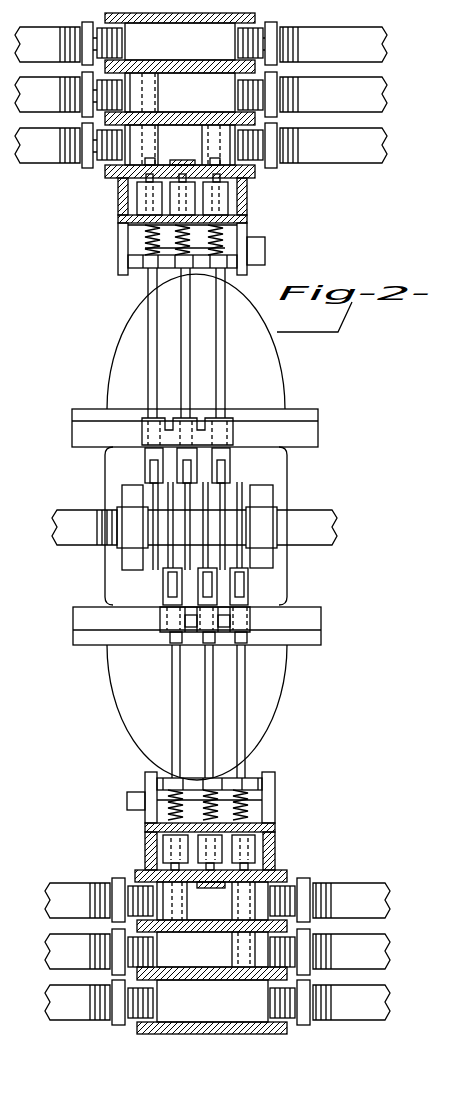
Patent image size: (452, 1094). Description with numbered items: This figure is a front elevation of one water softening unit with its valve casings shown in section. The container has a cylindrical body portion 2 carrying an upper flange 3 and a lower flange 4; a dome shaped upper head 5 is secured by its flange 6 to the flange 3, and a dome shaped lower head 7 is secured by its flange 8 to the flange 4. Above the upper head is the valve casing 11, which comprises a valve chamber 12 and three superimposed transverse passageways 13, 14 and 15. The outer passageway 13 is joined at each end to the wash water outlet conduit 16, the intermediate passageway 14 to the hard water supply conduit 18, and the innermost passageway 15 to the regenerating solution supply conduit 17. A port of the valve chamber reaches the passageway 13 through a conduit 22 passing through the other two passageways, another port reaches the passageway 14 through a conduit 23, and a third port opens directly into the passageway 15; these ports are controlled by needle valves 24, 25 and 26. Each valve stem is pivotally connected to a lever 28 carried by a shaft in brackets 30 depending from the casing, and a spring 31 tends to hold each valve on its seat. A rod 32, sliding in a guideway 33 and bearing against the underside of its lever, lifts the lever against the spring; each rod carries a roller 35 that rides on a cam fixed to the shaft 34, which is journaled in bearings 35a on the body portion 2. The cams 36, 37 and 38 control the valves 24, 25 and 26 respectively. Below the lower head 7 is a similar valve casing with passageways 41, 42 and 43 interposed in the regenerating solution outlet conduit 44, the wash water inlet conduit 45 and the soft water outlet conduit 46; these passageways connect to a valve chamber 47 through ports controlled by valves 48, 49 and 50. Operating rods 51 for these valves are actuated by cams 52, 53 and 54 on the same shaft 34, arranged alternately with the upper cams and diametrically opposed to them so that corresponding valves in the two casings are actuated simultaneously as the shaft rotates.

The cylindrical body portion 2 is at (277, 590).
The upper flange 3 is at (302, 437).
The lower flange 4 is at (310, 613).
The upper head 5 is at (266, 360).
The upper head flange 6 is at (300, 412).
The lower head 7 is at (268, 682).
The lower head flange 8 is at (315, 636).
The valve casing 11 is at (247, 207).
The valve chamber 12 is at (120, 203).
The outer passageway 13 is at (180, 41).
The intermediate passageway 14 is at (180, 92).
The innermost passageway 15 is at (180, 143).
The wash water outlet conduit 16 is at (201, 43).
The regenerating solution supply conduit 17 is at (201, 145).
The hard water supply conduit 18 is at (201, 94).
The conduit 22 is at (162, 102).
The conduit 23 is at (207, 147).
The needle valve 24 is at (148, 178).
The needle valve 25 is at (218, 182).
The needle valve 26 is at (216, 175).
The lever 28 is at (147, 261).
The bracket 30 is at (118, 246).
The spring 31 is at (230, 229).
The valve actuating rod 32 is at (218, 323).
The guideway 33 is at (143, 435).
The cam shaft 34 is at (194, 527).
The roller 35 is at (148, 467).
The bearing 35a is at (259, 521).
The cam 36 is at (153, 495).
The cam 37 is at (187, 552).
The cam 38 is at (226, 556).
The transverse passageway 41 is at (212, 902).
The transverse passageway 42 is at (212, 949).
The transverse passageway 43 is at (212, 1001).
The regenerating solution outlet conduit 44 is at (217, 900).
The wash water inlet conduit 45 is at (217, 952).
The soft water outlet conduit 46 is at (217, 1002).
The valve chamber 47 is at (259, 840).
The valve 48 is at (255, 860).
The valve 49 is at (171, 863).
The valve 50 is at (248, 862).
The operating rod 51 is at (173, 743).
The cam 52 is at (208, 553).
The cam 53 is at (170, 550).
The cam 54 is at (238, 482).